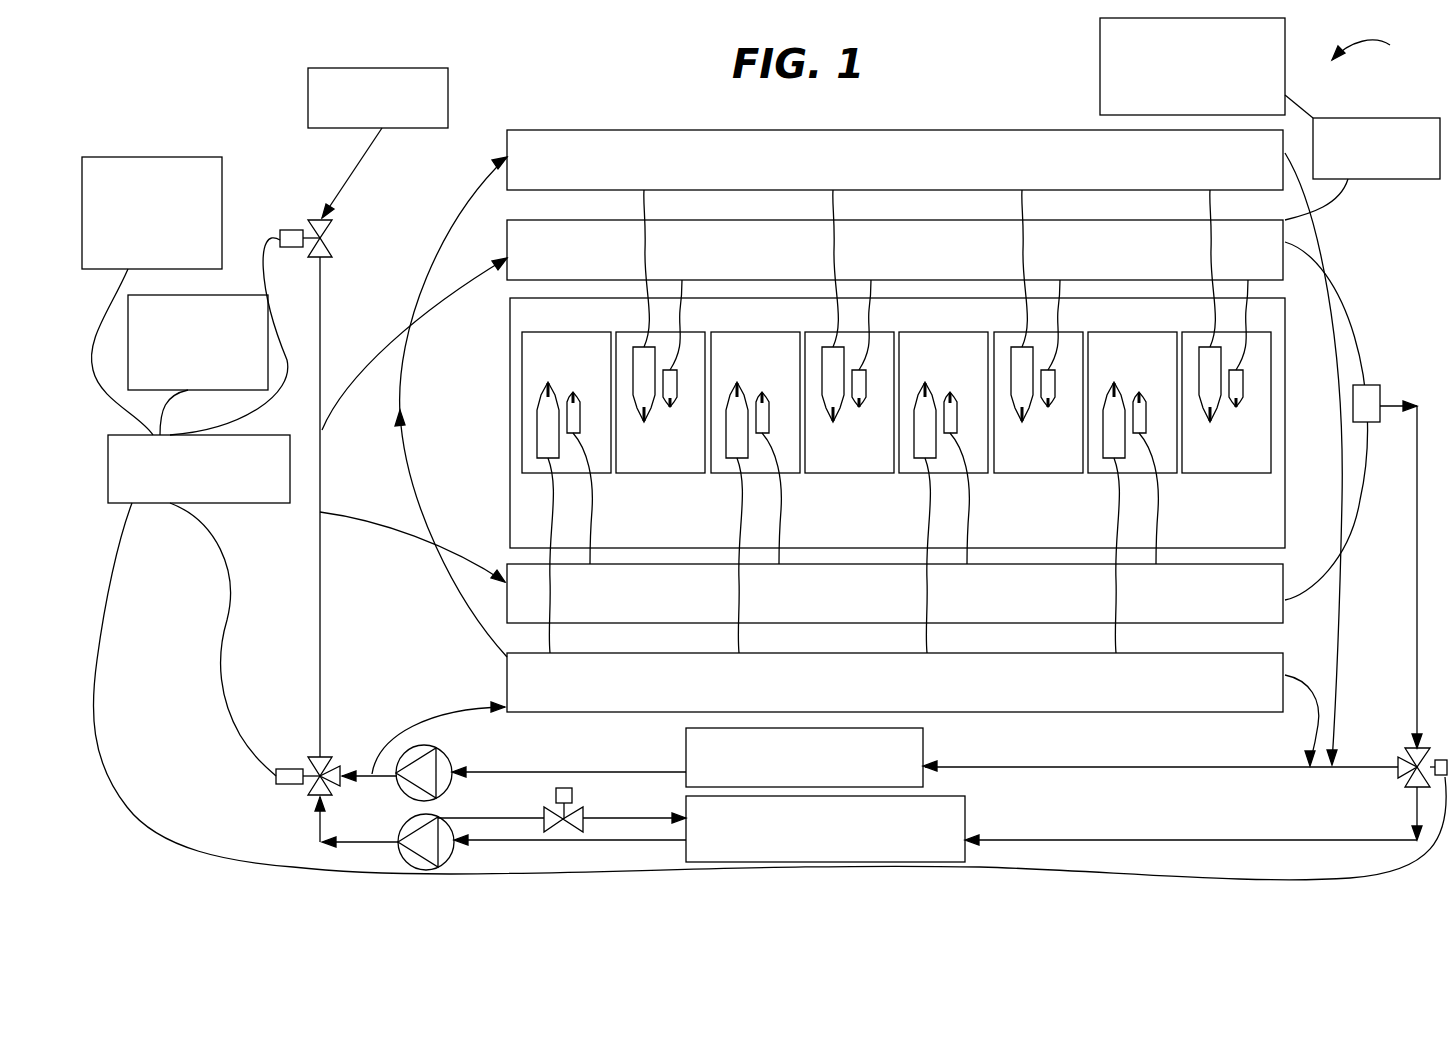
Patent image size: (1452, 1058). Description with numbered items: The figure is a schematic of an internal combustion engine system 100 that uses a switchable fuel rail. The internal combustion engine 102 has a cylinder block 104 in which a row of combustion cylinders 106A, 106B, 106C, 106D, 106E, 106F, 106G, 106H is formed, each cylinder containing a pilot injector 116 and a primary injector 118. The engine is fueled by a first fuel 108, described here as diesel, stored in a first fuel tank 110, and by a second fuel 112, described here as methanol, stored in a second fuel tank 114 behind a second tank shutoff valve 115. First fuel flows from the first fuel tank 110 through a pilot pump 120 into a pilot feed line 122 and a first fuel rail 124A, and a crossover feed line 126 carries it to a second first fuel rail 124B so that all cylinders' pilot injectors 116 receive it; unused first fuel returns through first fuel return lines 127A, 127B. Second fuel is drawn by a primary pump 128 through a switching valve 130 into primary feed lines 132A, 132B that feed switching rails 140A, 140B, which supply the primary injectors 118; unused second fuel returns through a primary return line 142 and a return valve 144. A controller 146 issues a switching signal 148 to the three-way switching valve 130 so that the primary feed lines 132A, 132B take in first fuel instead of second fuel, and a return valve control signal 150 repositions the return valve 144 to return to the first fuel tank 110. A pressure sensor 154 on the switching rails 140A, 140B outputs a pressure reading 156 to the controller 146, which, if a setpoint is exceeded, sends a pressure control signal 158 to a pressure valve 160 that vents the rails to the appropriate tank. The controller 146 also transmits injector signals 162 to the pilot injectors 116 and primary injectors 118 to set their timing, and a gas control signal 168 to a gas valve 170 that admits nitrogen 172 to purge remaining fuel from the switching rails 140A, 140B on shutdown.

The internal combustion engine system 100 is at (1376, 61).
The internal combustion engine 102 is at (477, 410).
The cylinder block 104 is at (850, 440).
The combustion cylinder 106A is at (522, 483).
The combustion cylinder 106B is at (672, 477).
The combustion cylinder 106C is at (730, 477).
The combustion cylinder 106D is at (820, 477).
The combustion cylinder 106E is at (897, 477).
The combustion cylinder 106F is at (1013, 477).
The combustion cylinder 106G is at (1100, 477).
The combustion cylinder 106H is at (1233, 477).
The first fuel 108 is at (912, 757).
The first fuel tank 110 is at (687, 757).
The second fuel 112 is at (945, 835).
The second fuel tank 114 is at (709, 829).
The second tank shutoff valve 115 is at (572, 788).
The pilot injector 116 is at (548, 382).
The primary injector 118 is at (593, 368).
The pilot pump 120 is at (440, 740).
The pilot feed line 122 is at (420, 716).
The first fuel rail 124A is at (895, 682).
The first fuel rail 124B is at (895, 160).
The crossover feed line 126 is at (460, 602).
The first fuel return line 127A is at (1317, 723).
The first fuel return line 127B is at (1342, 633).
The primary pump 128 is at (407, 817).
The switching valve 130 is at (332, 757).
The primary feed line 132A is at (375, 357).
The primary feed line 132B is at (353, 510).
The switching rail 140A is at (895, 593).
The switching rail 140B is at (895, 250).
The primary return line 142 is at (1418, 563).
The return valve 144 is at (1398, 777).
The controller 146 is at (199, 469).
The switching signal 148 is at (217, 653).
The return valve control signal 150 is at (107, 613).
The pressure sensor 154 is at (1362, 169).
The pressure reading 156 is at (1206, 68).
The pressure control signal 158 is at (152, 296).
The pressure valve 160 is at (1380, 395).
The injector signal 162 is at (198, 365).
The gas control signal 168 is at (290, 230).
The gas valve 170 is at (332, 227).
The nitrogen 172 is at (378, 143).